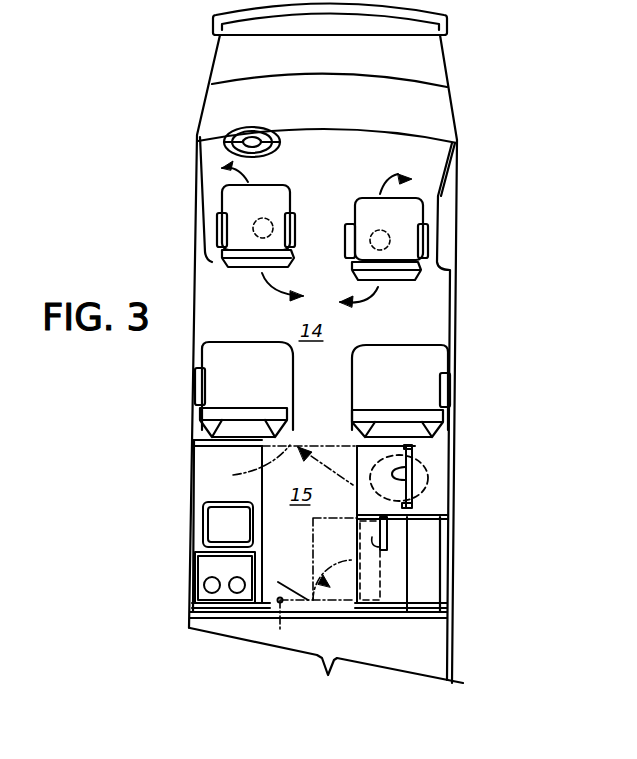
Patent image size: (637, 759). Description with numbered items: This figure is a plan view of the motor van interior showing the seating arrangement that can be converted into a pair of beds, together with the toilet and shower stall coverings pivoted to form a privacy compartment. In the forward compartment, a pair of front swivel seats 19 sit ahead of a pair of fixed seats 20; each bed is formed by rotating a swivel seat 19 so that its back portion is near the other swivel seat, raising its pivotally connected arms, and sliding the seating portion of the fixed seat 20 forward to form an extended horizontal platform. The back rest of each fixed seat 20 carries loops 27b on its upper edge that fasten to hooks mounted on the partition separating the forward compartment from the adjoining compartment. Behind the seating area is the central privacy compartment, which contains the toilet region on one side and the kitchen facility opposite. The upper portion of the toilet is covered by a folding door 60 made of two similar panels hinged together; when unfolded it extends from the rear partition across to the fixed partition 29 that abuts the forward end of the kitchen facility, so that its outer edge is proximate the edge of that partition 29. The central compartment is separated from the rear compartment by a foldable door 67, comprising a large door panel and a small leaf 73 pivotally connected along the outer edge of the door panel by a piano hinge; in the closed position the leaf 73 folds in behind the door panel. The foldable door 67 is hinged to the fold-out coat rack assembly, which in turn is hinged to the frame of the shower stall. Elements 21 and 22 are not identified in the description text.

The swivel seat 19 is at (418, 198).
The fixed seat 20 is at (420, 345).
The armrest 21 is at (422, 240).
The front swivel seat 22 is at (431, 234).
The loops 27b is at (210, 428).
The partition 29 is at (215, 440).
The folding door 60 is at (233, 475).
The foldable door 67 is at (278, 582).
The leaf 73 is at (382, 547).